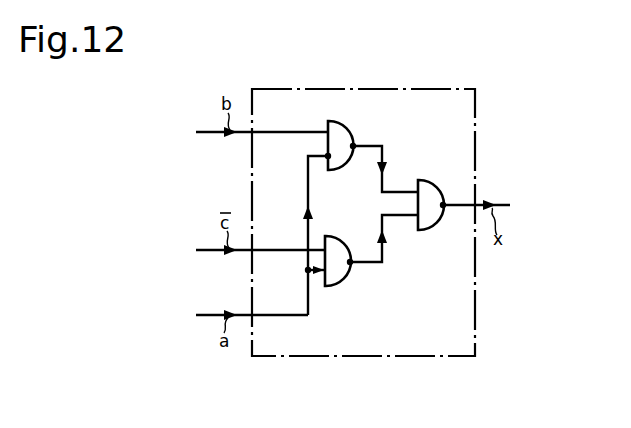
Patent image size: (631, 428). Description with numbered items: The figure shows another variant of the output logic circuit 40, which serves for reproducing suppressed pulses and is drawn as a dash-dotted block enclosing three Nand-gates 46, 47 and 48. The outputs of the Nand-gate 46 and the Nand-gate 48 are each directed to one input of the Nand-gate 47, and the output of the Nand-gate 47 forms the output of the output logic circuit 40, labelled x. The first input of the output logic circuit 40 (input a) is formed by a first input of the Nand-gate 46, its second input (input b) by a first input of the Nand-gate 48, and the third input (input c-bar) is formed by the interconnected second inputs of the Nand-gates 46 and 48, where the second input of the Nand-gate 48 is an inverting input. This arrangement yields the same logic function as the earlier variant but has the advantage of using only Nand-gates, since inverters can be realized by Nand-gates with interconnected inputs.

The output logic circuit 40 is at (450, 357).
The Nand-gate 46 is at (337, 272).
The Nand-gate 47 is at (430, 196).
The Nand-gate 48 is at (343, 138).